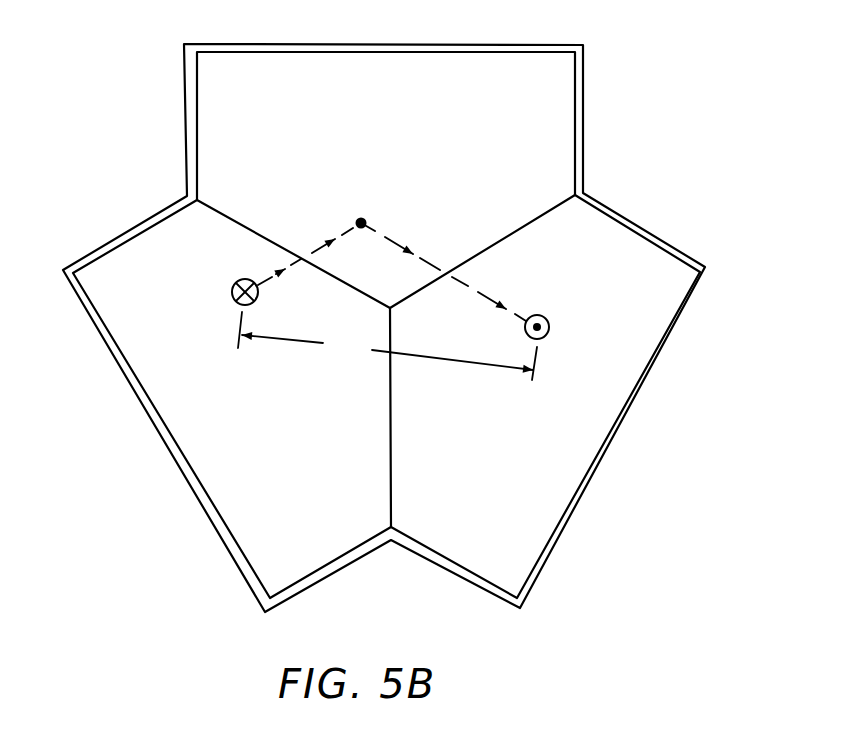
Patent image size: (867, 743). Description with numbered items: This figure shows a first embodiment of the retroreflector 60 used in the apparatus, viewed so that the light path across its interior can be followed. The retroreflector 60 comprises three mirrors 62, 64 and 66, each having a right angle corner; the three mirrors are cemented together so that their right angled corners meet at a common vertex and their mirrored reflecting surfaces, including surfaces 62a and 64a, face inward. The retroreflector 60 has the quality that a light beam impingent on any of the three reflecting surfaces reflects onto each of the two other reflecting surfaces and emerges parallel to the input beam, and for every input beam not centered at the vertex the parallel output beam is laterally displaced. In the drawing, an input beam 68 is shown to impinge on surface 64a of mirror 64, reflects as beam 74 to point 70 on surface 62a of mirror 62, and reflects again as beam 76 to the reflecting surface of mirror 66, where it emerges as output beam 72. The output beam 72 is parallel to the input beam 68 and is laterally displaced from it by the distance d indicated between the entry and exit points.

The retroreflector 60 is at (665, 408).
The mirror 62 is at (578, 106).
The reflecting surface 62a is at (508, 100).
The mirror 64 is at (208, 481).
The reflecting surface 64a is at (317, 537).
The mirror 66 is at (643, 233).
The input beam 68 is at (233, 287).
The point 70 is at (361, 217).
The output beam 72 is at (547, 335).
The beam 74 is at (315, 252).
The beam 76 is at (462, 283).